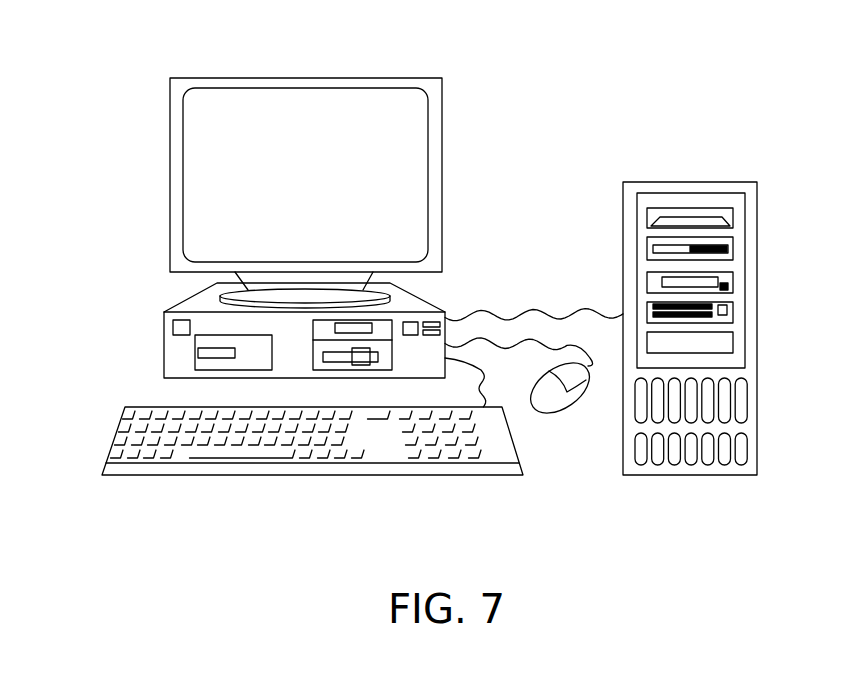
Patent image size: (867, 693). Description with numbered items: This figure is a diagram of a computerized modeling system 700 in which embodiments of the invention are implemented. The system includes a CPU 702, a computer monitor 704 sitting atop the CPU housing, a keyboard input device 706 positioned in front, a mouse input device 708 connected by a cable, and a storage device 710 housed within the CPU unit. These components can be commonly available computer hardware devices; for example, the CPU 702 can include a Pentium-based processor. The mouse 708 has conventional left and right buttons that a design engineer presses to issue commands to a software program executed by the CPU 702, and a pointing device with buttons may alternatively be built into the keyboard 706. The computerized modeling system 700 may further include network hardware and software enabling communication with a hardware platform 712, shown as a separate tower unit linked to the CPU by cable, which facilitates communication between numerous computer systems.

The computerized modeling system 700 is at (497, 52).
The CPU 702 is at (198, 350).
The computer monitor 704 is at (417, 160).
The keyboard input device 706 is at (117, 430).
The mouse input device 708 is at (575, 413).
The storage device 710 is at (380, 345).
The hardware platform 712 is at (690, 182).